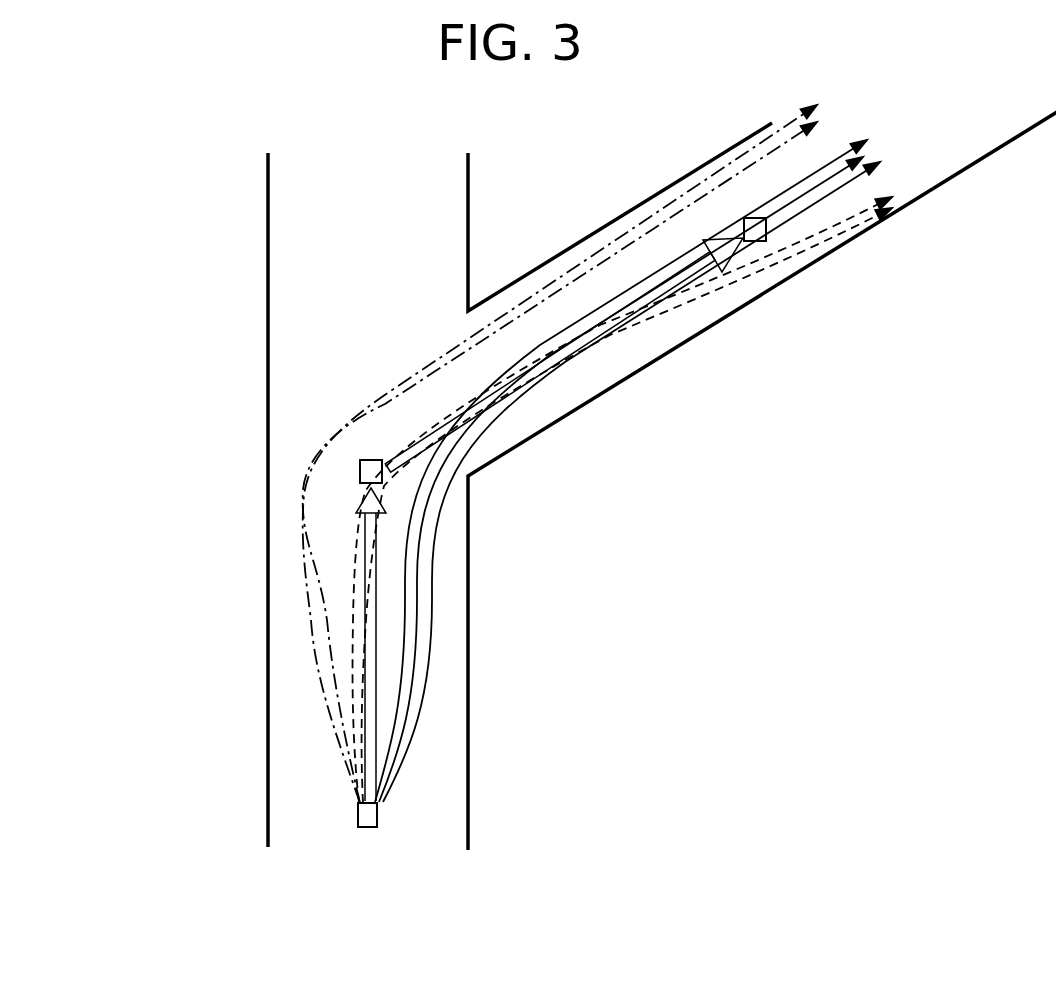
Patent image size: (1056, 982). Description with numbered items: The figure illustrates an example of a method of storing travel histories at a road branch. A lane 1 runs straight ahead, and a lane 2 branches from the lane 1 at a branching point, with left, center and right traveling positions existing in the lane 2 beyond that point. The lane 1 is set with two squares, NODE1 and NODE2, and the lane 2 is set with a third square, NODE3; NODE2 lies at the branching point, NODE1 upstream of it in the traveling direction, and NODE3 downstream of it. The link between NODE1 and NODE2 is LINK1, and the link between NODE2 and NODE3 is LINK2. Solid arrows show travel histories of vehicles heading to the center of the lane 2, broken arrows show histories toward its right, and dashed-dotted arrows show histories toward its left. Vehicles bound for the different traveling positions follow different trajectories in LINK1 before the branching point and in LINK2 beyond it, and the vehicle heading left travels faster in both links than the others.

The lane 1 is at (268, 543).
The lane 2 is at (627, 380).
The node NODE1 is at (368, 815).
The node NODE2 is at (378, 475).
The node NODE3 is at (760, 242).
The link LINK1 is at (375, 643).
The link LINK2 is at (667, 283).